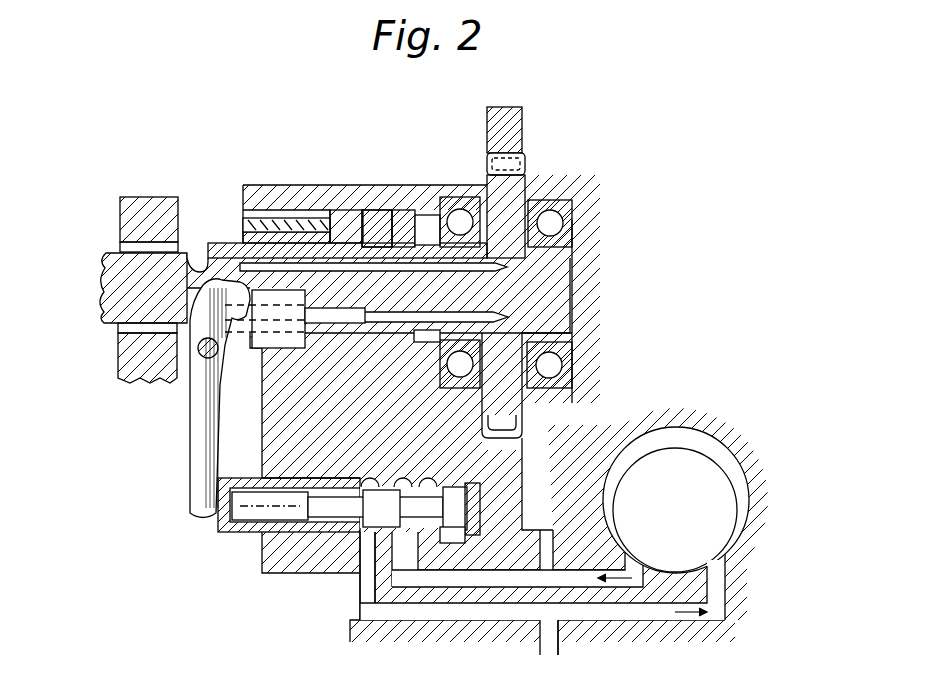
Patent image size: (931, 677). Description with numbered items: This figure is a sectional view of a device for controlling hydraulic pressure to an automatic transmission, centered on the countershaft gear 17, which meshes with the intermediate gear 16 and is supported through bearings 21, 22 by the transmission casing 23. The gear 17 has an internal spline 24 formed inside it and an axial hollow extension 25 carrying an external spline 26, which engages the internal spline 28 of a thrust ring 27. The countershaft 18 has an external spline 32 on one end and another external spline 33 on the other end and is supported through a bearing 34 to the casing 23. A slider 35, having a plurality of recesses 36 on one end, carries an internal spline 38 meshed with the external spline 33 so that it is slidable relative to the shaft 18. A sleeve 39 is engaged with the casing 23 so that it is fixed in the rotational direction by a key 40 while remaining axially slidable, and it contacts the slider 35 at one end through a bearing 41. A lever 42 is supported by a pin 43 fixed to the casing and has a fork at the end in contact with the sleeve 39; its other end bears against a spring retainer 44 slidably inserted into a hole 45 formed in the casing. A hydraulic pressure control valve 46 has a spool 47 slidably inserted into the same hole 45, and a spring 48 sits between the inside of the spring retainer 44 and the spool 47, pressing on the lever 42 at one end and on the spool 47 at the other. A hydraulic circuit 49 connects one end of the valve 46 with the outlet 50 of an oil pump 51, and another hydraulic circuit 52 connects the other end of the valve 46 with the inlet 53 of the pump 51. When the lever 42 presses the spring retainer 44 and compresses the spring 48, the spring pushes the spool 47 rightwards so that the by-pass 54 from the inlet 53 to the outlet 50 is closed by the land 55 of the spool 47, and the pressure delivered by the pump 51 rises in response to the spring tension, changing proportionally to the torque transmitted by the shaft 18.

The intermediate gear 16 is at (522, 117).
The countershaft gear 17 is at (510, 187).
The countershaft 18 is at (373, 205).
The bearing 21 is at (480, 197).
The bearing 22 is at (572, 220).
The transmission casing 23 is at (145, 202).
The internal spline 24 is at (565, 305).
The axial hollow extension 25 is at (422, 338).
The external spline 26 is at (437, 262).
The thrust ring 27 is at (430, 207).
The internal spline 28 is at (455, 200).
The external spline 32 is at (550, 327).
The external spline 33 is at (192, 262).
The bearing 34 is at (118, 247).
The slider 35 is at (385, 200).
The recesses 36 is at (398, 208).
The internal spline 38 is at (216, 247).
The sleeve 39 is at (330, 223).
The key 40 is at (268, 213).
The bearing 41 is at (350, 212).
The lever 42 is at (197, 413).
The pin 43 is at (223, 363).
The spring retainer 44 is at (225, 532).
The hole 45 is at (295, 465).
The hydraulic pressure control valve 46 is at (393, 478).
The spool 47 is at (462, 490).
The spring 48 is at (337, 506).
The hydraulic circuit 49 is at (520, 567).
The outlet 50 is at (622, 563).
The oil pump 51 is at (707, 480).
The hydraulic circuit 52 is at (488, 613).
The inlet 53 is at (715, 582).
The by-pass 54 is at (403, 530).
The land 55 is at (381, 508).